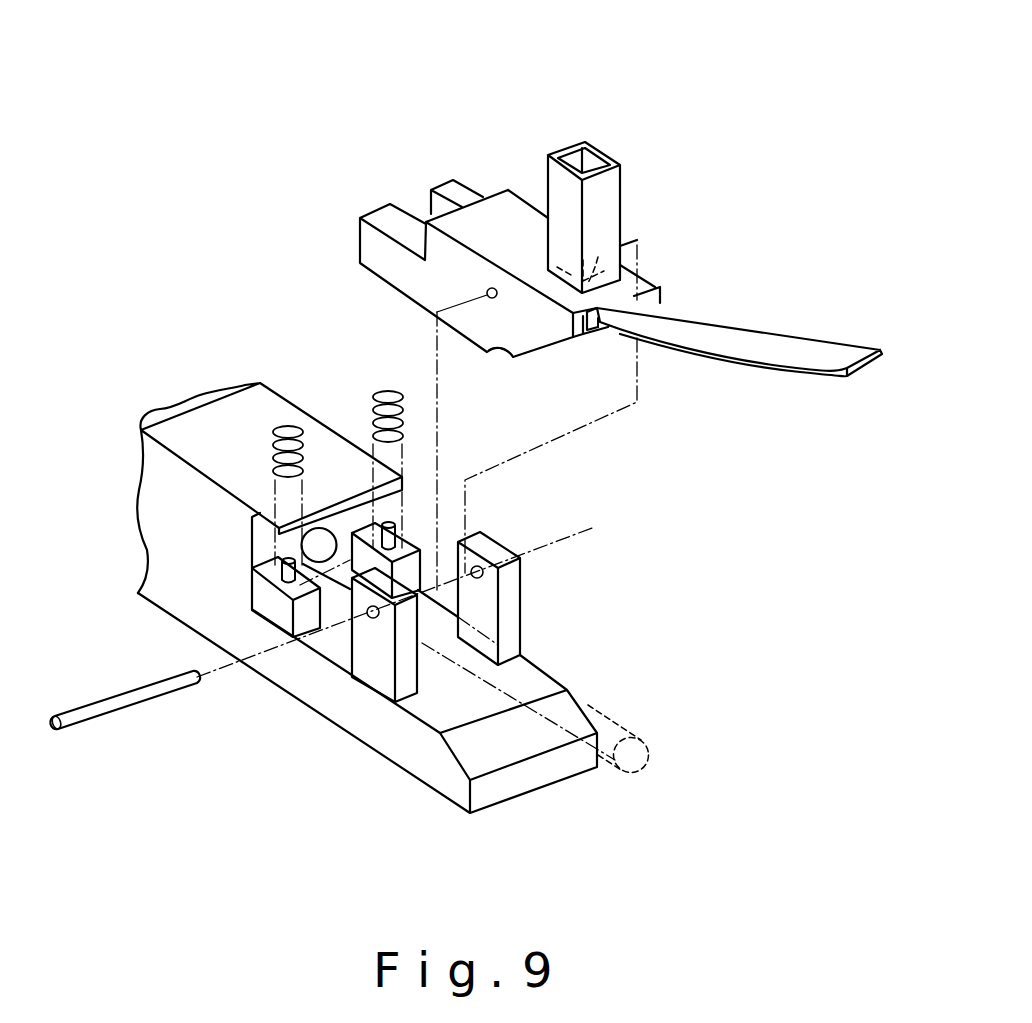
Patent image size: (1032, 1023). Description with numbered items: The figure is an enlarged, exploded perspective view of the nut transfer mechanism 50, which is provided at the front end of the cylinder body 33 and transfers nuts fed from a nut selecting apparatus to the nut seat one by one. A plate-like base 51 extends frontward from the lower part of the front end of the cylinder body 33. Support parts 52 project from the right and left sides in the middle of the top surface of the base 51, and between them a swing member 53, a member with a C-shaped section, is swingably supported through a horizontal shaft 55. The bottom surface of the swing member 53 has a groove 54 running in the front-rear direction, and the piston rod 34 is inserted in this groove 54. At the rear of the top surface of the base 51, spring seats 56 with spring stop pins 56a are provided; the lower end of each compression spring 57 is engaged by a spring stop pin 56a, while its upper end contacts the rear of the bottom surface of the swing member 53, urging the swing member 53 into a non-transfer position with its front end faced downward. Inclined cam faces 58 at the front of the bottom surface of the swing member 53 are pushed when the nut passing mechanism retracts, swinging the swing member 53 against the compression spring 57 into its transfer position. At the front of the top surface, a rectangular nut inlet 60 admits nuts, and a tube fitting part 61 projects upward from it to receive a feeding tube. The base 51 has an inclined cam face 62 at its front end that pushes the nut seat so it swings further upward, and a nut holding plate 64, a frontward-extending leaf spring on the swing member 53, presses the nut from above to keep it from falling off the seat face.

The cylinder body 33 is at (155, 493).
The piston rod 34 is at (628, 717).
The nut transfer mechanism 50 is at (275, 134).
The base 51 is at (332, 705).
The support parts 52 is at (363, 645).
The swing member 53 is at (523, 188).
The groove 54 is at (590, 323).
The horizontal shaft 55 is at (53, 734).
The spring seats 56 is at (255, 593).
The spring stop pins 56a is at (282, 562).
The compression spring 57 is at (380, 392).
The inclined cam faces 58 is at (525, 355).
The nut inlet 60 is at (598, 257).
The tube fitting part 61 is at (608, 183).
The inclined cam face 62 is at (523, 745).
The nut holding plate 64 is at (757, 330).